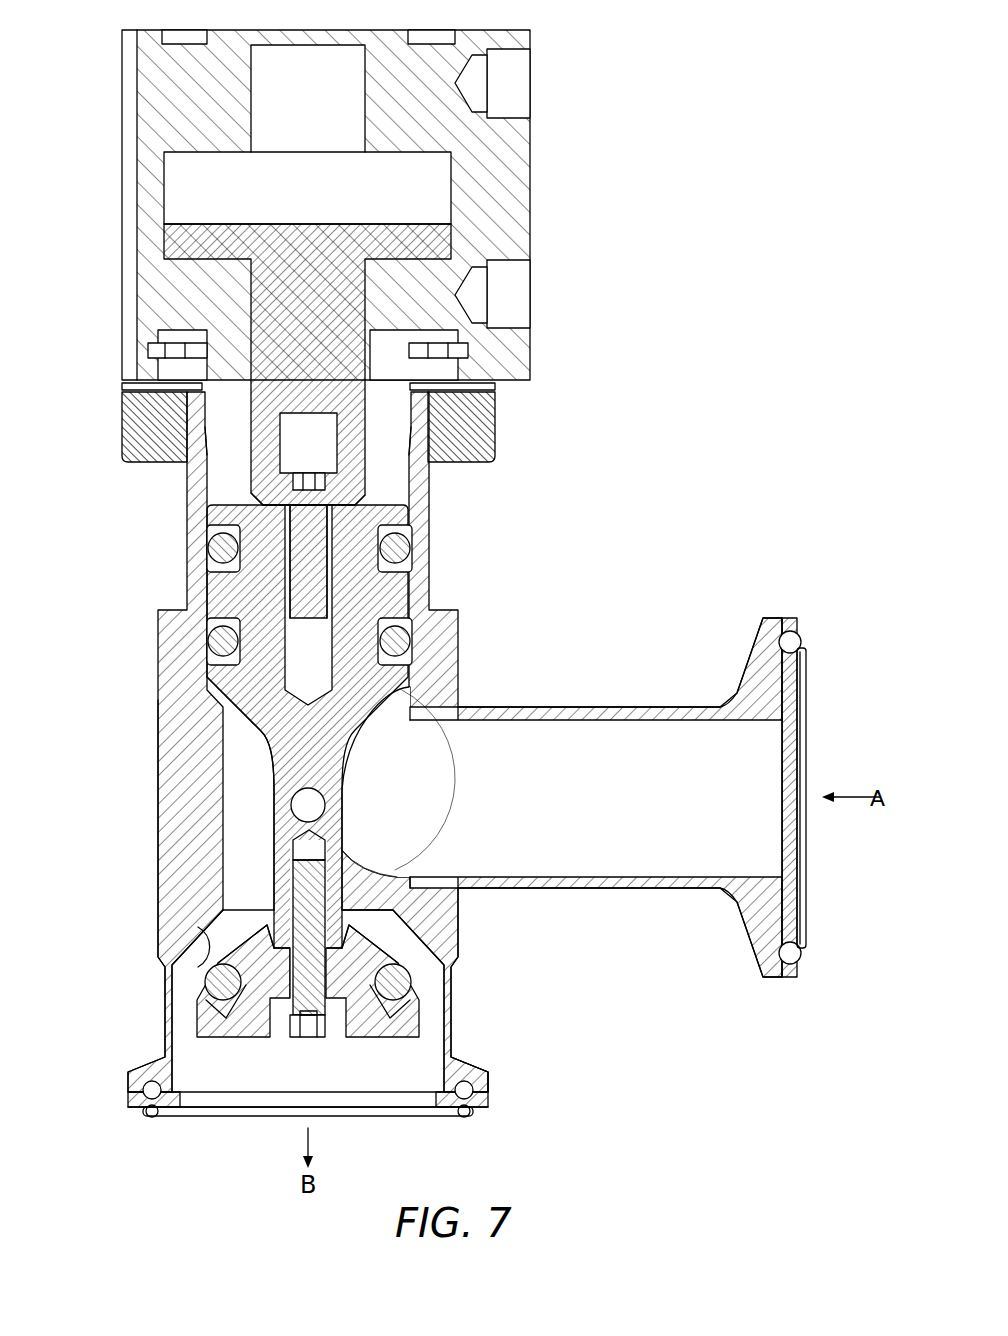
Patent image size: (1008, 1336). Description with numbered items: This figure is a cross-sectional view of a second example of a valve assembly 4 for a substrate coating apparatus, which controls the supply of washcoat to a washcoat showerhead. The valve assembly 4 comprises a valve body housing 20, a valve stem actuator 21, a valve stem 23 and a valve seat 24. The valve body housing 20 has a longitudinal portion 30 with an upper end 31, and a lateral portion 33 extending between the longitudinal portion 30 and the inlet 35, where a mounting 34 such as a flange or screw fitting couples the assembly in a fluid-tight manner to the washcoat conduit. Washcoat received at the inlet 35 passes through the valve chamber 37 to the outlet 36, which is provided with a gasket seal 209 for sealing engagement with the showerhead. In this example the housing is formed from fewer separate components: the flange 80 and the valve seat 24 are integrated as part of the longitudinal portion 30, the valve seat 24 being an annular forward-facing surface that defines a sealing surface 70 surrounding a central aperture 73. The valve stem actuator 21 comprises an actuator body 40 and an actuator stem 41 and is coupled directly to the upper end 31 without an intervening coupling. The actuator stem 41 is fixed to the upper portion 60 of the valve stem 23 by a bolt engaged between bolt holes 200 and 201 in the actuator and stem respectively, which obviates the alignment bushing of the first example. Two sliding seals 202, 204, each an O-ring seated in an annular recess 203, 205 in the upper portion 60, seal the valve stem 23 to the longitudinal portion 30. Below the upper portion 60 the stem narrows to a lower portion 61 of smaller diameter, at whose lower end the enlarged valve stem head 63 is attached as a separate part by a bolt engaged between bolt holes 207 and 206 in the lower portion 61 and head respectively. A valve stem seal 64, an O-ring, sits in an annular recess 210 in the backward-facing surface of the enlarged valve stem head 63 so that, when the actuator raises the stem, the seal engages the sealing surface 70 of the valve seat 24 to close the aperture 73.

The valve assembly 4 is at (661, 196).
The valve body housing 20 is at (190, 905).
The valve stem actuator 21 is at (110, 198).
The valve stem 23 is at (243, 752).
The valve seat 24 is at (440, 913).
The longitudinal portion 30 is at (175, 653).
The upper end 31 is at (133, 422).
The lateral portion 33 is at (660, 705).
The mounting 34 is at (757, 636).
The inlet 35 is at (824, 740).
The outlet 36 is at (221, 1124).
The valve chamber 37 is at (392, 800).
The actuator body 40 is at (525, 183).
The actuator stem 41 is at (263, 495).
The upper portion 60 is at (223, 588).
The lower portion 61 is at (290, 826).
The enlarged valve stem head 63 is at (213, 1027).
The valve stem seal 64 is at (400, 975).
The sealing surface 70 is at (200, 948).
The aperture 73 is at (376, 921).
The flange 80 is at (478, 1075).
The bolt hole 200 is at (337, 447).
The bolt hole 201 is at (333, 595).
The sliding seal 202 is at (393, 540).
The annular recess 203 is at (400, 568).
The sliding seal 204 is at (395, 635).
The annular recess 205 is at (402, 660).
The bolt hole 206 is at (283, 1018).
The bolt hole 207 is at (325, 852).
The gasket seal 209 is at (470, 1112).
The annular recess 210 is at (400, 1005).